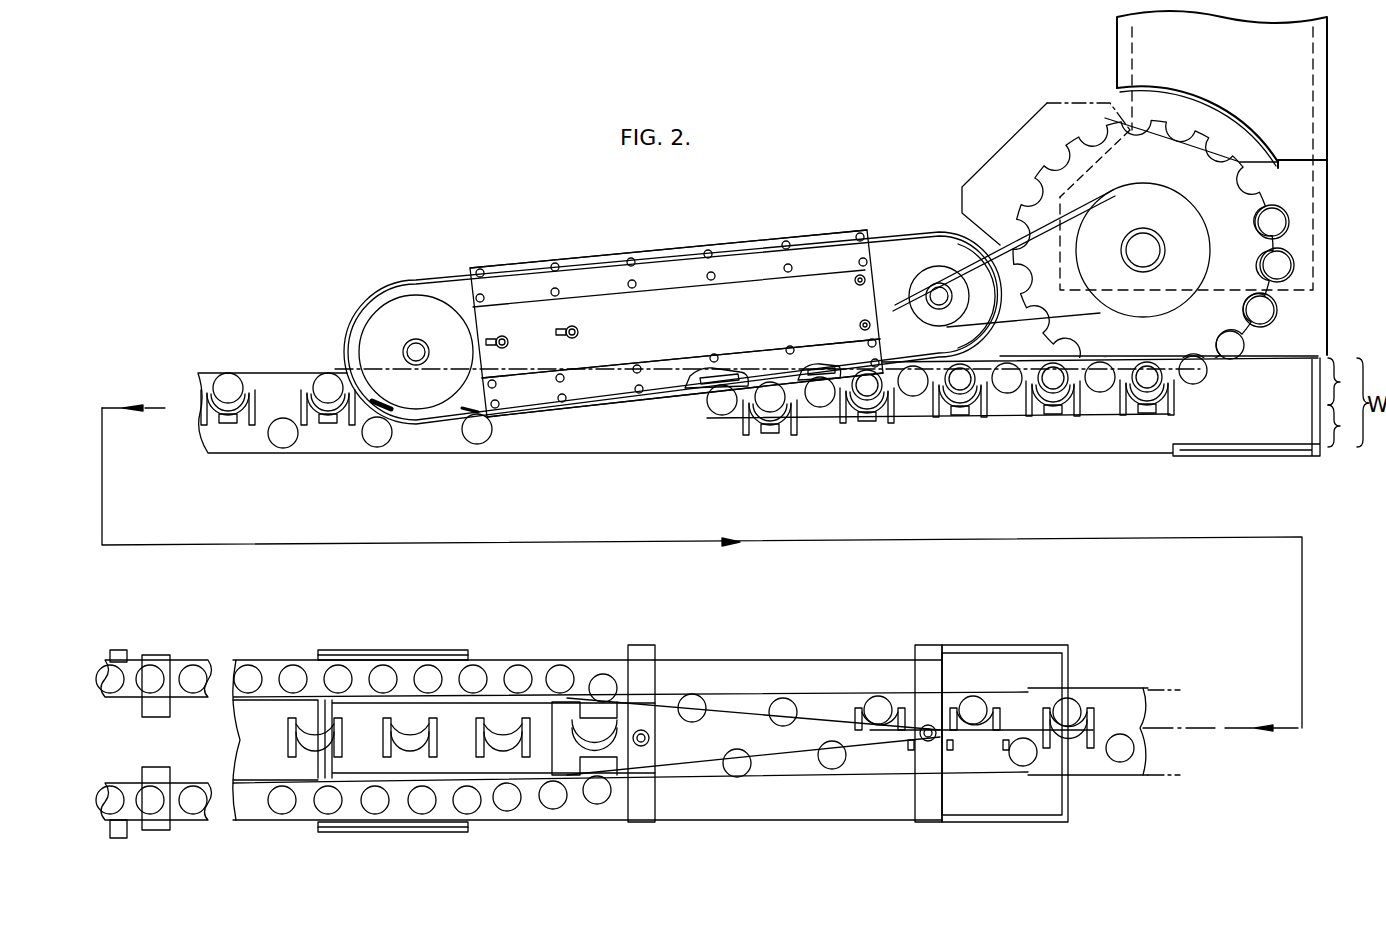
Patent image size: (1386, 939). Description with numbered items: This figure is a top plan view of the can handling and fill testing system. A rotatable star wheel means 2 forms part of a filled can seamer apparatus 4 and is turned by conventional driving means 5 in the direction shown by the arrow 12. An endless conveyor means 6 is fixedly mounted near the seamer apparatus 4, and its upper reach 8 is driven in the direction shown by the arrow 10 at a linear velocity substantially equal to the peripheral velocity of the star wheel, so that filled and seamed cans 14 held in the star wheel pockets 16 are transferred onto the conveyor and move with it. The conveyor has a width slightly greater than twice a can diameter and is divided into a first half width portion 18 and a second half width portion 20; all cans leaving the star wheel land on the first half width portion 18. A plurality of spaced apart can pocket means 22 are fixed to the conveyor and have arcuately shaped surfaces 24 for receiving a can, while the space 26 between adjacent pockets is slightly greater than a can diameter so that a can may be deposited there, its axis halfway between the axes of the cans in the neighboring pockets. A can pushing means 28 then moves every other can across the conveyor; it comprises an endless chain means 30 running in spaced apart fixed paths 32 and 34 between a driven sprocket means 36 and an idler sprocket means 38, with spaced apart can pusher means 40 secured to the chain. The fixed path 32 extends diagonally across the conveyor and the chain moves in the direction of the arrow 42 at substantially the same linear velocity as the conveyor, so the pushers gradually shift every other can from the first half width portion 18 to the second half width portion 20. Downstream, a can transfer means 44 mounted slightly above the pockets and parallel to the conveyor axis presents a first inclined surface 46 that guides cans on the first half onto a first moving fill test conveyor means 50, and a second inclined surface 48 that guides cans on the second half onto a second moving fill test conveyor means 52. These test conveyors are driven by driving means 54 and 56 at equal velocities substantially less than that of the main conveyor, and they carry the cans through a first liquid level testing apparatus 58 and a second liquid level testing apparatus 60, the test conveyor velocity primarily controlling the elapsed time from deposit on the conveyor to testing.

The rotatable star wheel means 2 is at (1010, 157).
The filled can seamer apparatus 4 is at (1232, 63).
The driving means 5 is at (1130, 107).
The endless conveyor means 6 is at (690, 428).
The upper reach 8 is at (848, 442).
The arrow 10 is at (890, 478).
The arrow 12 is at (1175, 340).
The filled and seamed cans 14 is at (1294, 263).
The star wheel pockets 16 is at (1143, 249).
The first half width portion 18 is at (1344, 381).
The second half width portion 20 is at (1344, 426).
The can pocket means 22 is at (1120, 413).
The arcuately shaped surfaces 24 is at (1047, 392).
The space 26 is at (1000, 402).
The can pushing means 28 is at (707, 238).
The endless chain means 30 is at (440, 283).
The fixed path 32 is at (518, 420).
The fixed path 34 is at (568, 253).
The driven sprocket means 36 is at (933, 262).
The idler sprocket means 38 is at (385, 313).
The can pusher means 40 is at (687, 383).
The arrow 42 is at (548, 428).
The can transfer means 44 is at (800, 737).
The first inclined surface 46 is at (716, 708).
The second inclined surface 48 is at (705, 765).
The first moving fill test conveyor means 50 is at (312, 668).
The second moving fill test conveyor means 52 is at (303, 812).
The driving means 54 is at (115, 648).
The driving means 56 is at (117, 840).
The first liquid level testing apparatus 58 is at (158, 662).
The second liquid level testing apparatus 60 is at (160, 826).